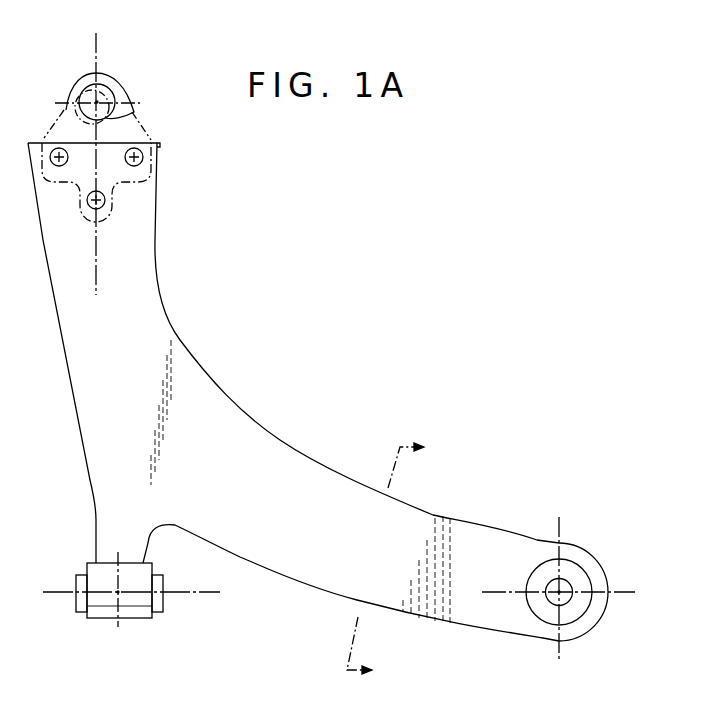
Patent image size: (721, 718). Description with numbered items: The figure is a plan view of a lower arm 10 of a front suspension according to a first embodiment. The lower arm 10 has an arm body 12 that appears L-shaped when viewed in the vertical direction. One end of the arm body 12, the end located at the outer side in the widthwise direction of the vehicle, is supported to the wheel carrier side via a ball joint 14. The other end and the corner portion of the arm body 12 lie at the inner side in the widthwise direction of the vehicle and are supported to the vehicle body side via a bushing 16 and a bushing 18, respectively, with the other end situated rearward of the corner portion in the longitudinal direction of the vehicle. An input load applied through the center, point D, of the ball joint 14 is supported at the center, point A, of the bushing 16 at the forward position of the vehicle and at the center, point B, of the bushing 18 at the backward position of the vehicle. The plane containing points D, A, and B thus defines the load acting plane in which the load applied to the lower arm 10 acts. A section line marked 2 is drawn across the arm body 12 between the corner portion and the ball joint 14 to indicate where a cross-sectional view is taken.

The lower arm 10 is at (160, 270).
The arm body 12 is at (195, 373).
The ball joint 14 is at (134, 109).
The bushing 16 is at (78, 603).
The bushing 18 is at (583, 605).
The section line 2- 2 is at (394, 565).
The center of bushing 16 A is at (120, 593).
The center of bushing 18 B is at (563, 590).
The center of ball joint D is at (103, 100).